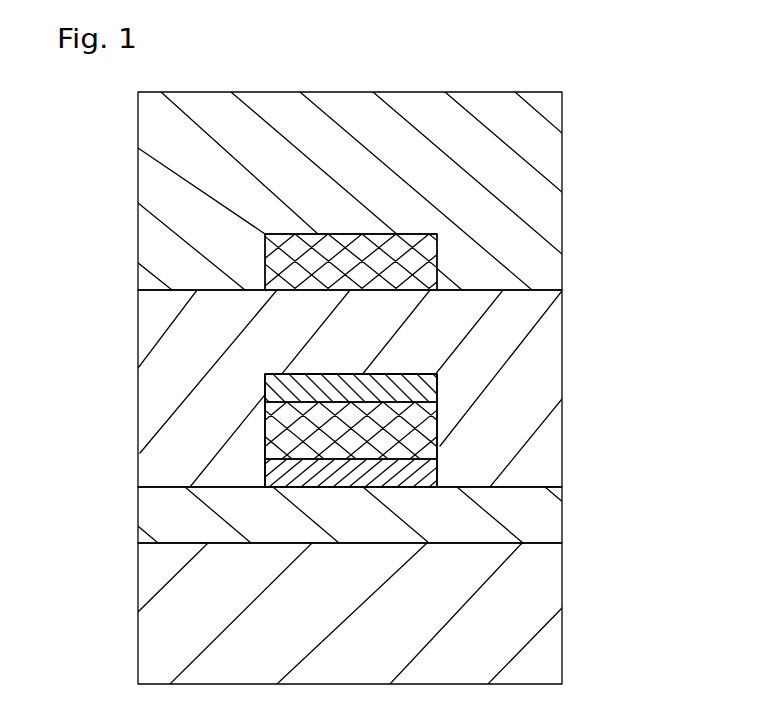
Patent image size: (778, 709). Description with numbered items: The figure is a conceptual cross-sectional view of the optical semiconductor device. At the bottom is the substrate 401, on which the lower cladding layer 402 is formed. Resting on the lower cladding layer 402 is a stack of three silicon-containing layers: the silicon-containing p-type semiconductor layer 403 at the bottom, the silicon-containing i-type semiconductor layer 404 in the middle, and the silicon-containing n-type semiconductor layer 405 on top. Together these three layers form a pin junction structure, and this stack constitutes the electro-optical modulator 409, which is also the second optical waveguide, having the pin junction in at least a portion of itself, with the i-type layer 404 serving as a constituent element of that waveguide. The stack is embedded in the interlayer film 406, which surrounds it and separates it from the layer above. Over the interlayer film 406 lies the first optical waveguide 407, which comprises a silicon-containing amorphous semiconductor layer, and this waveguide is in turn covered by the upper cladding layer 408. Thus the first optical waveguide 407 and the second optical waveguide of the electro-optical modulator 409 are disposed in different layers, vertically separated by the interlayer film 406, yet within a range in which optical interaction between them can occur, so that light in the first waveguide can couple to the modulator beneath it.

The substrate 401 is at (548, 598).
The lower cladding layer 402 is at (548, 518).
The silicon-containing p-type semiconductor layer 403 is at (267, 478).
The silicon-containing i-type semiconductor layer 404 is at (267, 436).
The silicon-containing n-type semiconductor layer 405 is at (267, 391).
The interlayer film 406 is at (548, 402).
The first optical waveguide 407 is at (267, 262).
The upper cladding layer 408 is at (550, 203).
The electro-optical modulator 409 is at (457, 397).